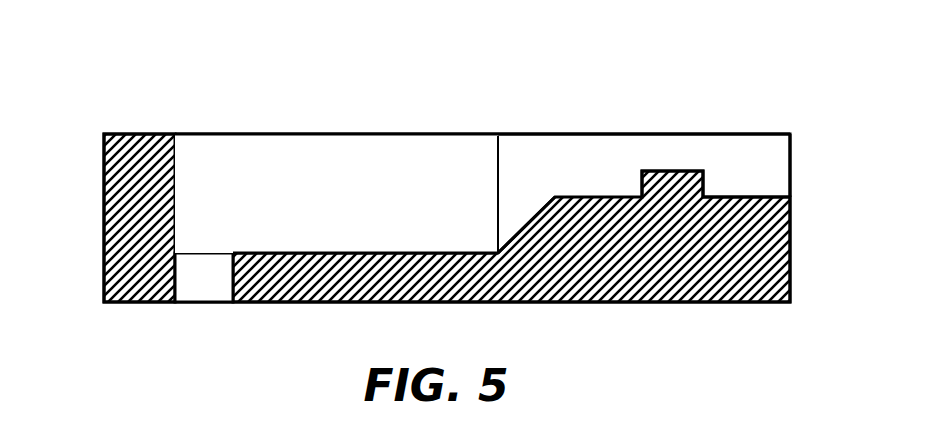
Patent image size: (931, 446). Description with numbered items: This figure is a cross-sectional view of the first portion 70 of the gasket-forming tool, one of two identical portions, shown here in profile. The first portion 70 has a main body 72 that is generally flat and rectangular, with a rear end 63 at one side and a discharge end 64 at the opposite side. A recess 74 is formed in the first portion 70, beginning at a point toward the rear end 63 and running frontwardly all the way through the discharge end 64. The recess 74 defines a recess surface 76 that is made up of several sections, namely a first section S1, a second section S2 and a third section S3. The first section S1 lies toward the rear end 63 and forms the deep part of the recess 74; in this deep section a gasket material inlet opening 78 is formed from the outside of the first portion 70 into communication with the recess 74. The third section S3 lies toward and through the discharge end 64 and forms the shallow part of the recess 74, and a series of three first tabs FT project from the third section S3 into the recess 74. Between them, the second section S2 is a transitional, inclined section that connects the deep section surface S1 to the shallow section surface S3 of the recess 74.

The first portion 70 is at (440, 74).
The main body 72 is at (205, 134).
The recess 74 is at (312, 160).
The gasket material inlet opening 78 is at (210, 262).
The first section S1 is at (376, 253).
The second section S2 is at (534, 213).
The third section S3 is at (752, 197).
The first tabs FT is at (667, 171).
The recess surface 76 is at (772, 195).
The discharge end 64 is at (790, 248).
The rear end 63 is at (104, 238).